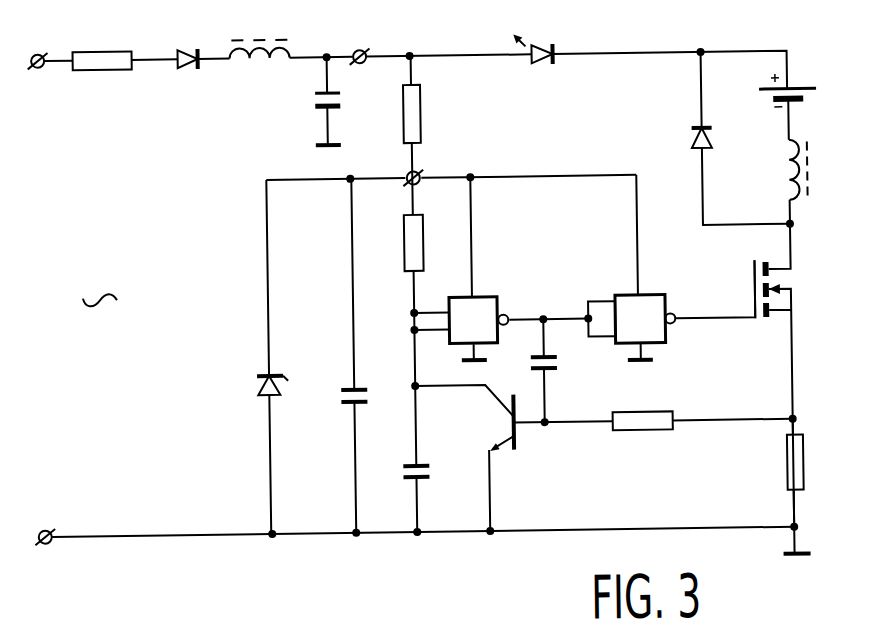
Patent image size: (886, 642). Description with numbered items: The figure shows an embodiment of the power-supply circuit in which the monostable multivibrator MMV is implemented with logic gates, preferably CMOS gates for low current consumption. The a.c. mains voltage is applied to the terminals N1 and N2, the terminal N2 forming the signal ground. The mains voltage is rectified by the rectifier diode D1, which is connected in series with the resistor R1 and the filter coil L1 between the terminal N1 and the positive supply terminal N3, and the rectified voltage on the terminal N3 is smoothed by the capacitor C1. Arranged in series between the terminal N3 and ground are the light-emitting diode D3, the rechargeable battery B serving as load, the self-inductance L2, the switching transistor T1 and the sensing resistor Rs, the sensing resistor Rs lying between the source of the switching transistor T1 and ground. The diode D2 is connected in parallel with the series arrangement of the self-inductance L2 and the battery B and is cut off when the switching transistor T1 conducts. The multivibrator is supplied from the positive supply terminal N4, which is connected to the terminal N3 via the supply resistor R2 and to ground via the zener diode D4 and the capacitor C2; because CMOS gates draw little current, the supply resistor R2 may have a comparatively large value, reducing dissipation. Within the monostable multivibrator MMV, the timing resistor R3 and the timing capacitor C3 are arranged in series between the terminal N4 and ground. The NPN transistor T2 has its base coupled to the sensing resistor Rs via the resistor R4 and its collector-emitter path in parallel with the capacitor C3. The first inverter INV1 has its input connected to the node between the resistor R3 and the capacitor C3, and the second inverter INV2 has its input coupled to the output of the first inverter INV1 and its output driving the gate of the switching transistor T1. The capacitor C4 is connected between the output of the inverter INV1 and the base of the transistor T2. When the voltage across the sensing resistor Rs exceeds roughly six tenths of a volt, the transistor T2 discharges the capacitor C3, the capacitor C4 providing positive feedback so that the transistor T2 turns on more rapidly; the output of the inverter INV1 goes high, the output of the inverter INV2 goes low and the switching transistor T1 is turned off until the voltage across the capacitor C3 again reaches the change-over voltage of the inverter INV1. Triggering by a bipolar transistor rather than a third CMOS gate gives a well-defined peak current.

The terminal N1 is at (39, 42).
The resistor R1 is at (102, 44).
The rectifier diode D1 is at (185, 43).
The filter coil L1 is at (259, 33).
The positive supply terminal N3 is at (365, 35).
The capacitor C1 is at (345, 101).
The supply resistor R2 is at (427, 113).
The positive supply terminal N4 is at (427, 165).
The light-emitting diode D3 is at (533, 36).
The diode D2 is at (685, 141).
The rechargeable battery B is at (788, 82).
The self-inductance L2 is at (813, 169).
The timing resistor R3 is at (427, 241).
The first inverter INV1 is at (487, 305).
The second inverter INV2 is at (639, 305).
The switching transistor T1 is at (789, 288).
The zener diode D4 is at (259, 386).
The capacitor C2 is at (369, 403).
The timing capacitor C3 is at (431, 476).
The capacitor C4 is at (561, 378).
The NPN transistor T2 is at (492, 423).
The resistor R4 is at (643, 437).
The sensing resistor Rs is at (811, 462).
The terminal N2 is at (48, 521).
The monostable multivibrator MMV is at (597, 502).